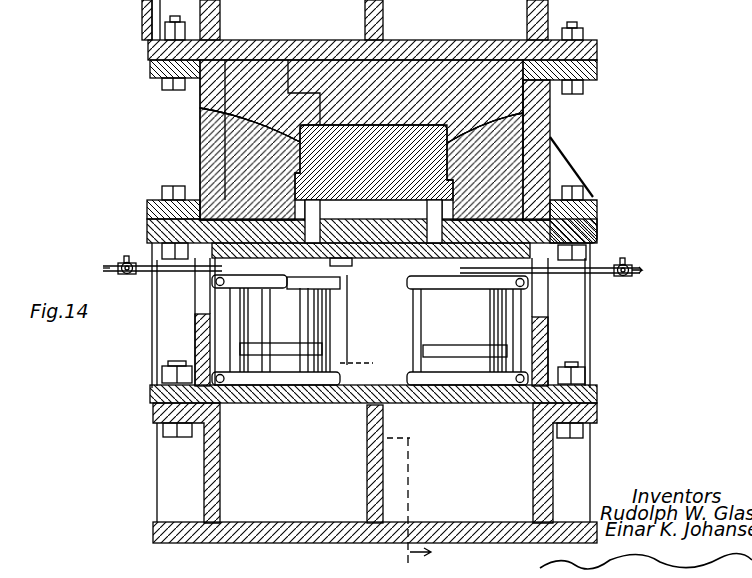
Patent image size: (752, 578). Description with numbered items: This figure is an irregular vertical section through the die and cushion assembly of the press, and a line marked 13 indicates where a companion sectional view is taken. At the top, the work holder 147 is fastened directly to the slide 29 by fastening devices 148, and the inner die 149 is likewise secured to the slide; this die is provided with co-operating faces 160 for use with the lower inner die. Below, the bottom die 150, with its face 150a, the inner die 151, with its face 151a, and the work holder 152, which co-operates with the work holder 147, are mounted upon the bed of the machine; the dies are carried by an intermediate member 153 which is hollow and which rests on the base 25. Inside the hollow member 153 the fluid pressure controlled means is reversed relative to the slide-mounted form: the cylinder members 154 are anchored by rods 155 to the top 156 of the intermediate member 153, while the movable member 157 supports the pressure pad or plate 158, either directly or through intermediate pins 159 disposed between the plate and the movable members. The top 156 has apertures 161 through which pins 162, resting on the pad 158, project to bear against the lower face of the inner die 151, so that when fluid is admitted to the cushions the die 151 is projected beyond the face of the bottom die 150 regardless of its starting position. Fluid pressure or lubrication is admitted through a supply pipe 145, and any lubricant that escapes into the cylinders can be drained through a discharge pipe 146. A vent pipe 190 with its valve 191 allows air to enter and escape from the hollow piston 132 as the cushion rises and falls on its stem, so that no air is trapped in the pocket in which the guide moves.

The section line 13 is at (405, 501).
The base frame 25 is at (222, 471).
The slide 29 is at (547, 26).
The hollow piston 132 is at (262, 295).
The supply pipe 145 is at (214, 280).
The discharge pipe 146 is at (262, 386).
The work holder 147 is at (200, 112).
The fastening devices 148 is at (206, 108).
The inner die 149 is at (297, 68).
The bottom die 150 is at (236, 150).
The body block shoulder 150a is at (450, 143).
The inner die 151 is at (432, 128).
The cavity shoulder 151a is at (455, 180).
The work holder 152 is at (200, 103).
The intermediate member 153 is at (552, 340).
The cylinder members 154 is at (306, 386).
The rods 155 is at (410, 318).
The top 156 is at (597, 230).
The movable member 157 is at (435, 340).
The pressure pad 158 is at (348, 262).
The pins 159 is at (310, 274).
The co-operating faces 160 is at (388, 124).
The apertures 161 is at (352, 262).
The pins 162 is at (320, 212).
The shaft 190 is at (108, 264).
The valve 191 is at (130, 262).